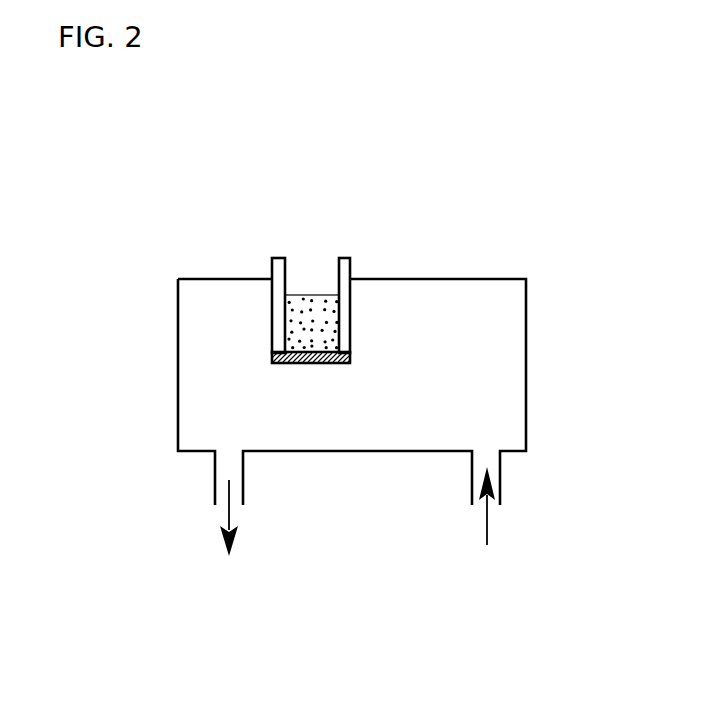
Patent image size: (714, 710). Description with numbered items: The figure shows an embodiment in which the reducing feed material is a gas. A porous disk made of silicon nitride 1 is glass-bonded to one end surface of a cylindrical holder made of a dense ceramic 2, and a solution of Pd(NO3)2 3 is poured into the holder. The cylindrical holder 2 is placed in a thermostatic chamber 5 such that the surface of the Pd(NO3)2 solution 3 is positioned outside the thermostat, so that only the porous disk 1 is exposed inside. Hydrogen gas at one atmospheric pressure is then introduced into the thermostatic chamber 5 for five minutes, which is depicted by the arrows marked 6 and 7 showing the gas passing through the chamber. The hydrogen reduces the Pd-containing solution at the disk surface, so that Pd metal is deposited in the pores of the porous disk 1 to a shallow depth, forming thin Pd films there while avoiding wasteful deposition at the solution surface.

The porous disk made of silicon nitride 1 is at (318, 364).
The cylindrical holder made of a dense ceramic 2 is at (342, 263).
The solution of Pd(NO3)2 3 is at (320, 332).
The thermostatic chamber 5 is at (232, 278).
The gas inlet 6 is at (486, 524).
The gas outlet 7 is at (229, 535).